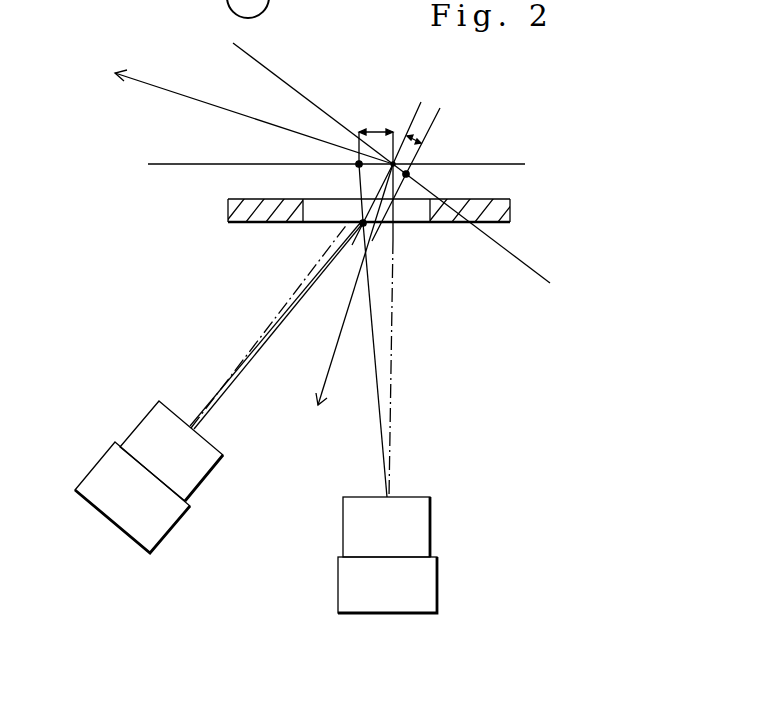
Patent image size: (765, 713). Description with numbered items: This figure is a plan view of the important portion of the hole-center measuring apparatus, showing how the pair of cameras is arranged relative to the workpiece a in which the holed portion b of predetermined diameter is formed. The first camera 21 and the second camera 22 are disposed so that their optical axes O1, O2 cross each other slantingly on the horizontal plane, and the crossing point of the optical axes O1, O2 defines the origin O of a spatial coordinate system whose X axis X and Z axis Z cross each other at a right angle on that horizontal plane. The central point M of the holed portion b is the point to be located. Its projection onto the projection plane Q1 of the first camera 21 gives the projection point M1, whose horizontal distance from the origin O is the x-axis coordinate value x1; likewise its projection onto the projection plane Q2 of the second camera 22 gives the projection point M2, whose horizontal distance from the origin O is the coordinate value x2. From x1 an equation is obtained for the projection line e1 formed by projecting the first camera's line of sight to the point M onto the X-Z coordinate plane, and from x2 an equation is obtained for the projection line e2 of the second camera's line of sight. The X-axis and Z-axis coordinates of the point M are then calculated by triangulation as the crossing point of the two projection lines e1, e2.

The first camera 21 is at (427, 529).
The second camera 22 is at (142, 426).
The workpiece a is at (252, 222).
The holed portion b is at (305, 212).
The projection plane of the first camera Q1 is at (162, 165).
The projection plane of the second camera Q2 is at (262, 63).
The Z axis Z is at (244, 111).
The X axis X is at (348, 295).
The origin O is at (421, 102).
The optical axis of the first camera O1 is at (391, 352).
The optical axis of the second camera O2 is at (252, 330).
The central point of the holed portion M is at (363, 223).
The projection point on the first projection plane M1 is at (356, 166).
The projection point on the second projection plane M2 is at (406, 174).
The x-axis coordinate value of point M1 x1 is at (366, 130).
The x-axis coordinate value of point M2 x2 is at (440, 108).
The projection line of the first camera e1 is at (379, 415).
The projection line of the second camera e2 is at (281, 324).